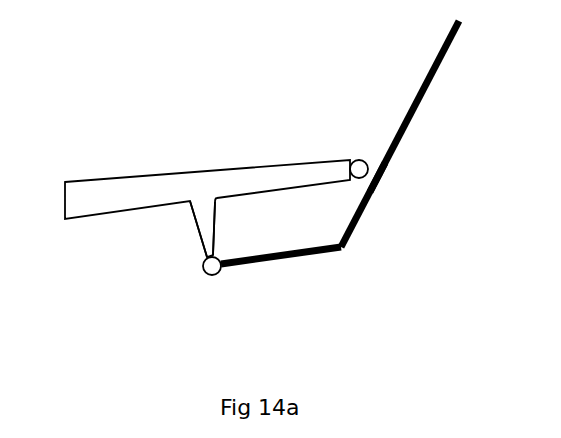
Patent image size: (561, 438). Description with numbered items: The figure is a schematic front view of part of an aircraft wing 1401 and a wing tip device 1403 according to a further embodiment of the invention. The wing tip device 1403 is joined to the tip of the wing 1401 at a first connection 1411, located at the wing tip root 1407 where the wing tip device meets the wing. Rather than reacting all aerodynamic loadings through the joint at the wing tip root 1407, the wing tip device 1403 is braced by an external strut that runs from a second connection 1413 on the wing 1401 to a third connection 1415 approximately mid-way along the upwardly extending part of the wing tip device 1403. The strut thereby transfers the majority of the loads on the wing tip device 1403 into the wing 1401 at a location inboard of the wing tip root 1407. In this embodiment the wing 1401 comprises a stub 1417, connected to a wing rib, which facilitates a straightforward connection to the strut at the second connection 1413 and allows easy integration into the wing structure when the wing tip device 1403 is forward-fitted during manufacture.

The wing 1401 is at (110, 185).
The wing tip device 1403 is at (417, 107).
The wing tip root 1407 is at (378, 178).
The first connection 1411 is at (355, 161).
The second connection 1413 is at (206, 273).
The third connection 1415 is at (337, 248).
The stub 1417 is at (195, 222).